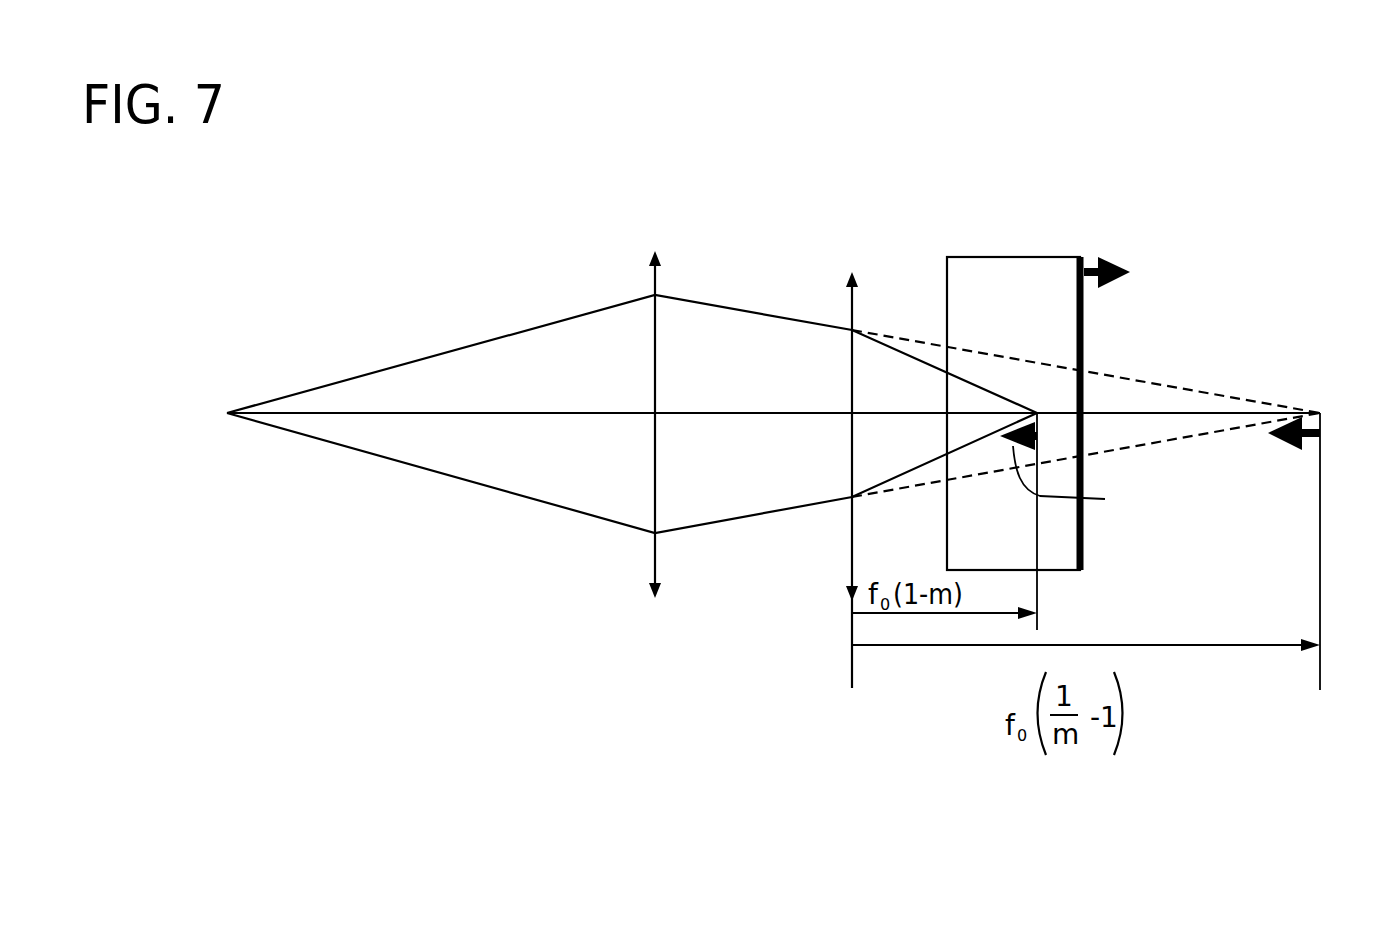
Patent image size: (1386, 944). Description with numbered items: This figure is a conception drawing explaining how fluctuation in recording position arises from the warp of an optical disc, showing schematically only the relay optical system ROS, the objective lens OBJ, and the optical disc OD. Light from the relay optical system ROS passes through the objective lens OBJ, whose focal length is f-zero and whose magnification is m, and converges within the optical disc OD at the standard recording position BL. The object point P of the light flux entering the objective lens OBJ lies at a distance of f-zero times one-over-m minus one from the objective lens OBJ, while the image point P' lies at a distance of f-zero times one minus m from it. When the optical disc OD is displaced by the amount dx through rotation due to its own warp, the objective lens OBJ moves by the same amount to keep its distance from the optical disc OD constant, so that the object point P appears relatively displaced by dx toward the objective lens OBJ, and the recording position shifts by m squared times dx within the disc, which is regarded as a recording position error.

The relay optical system ROS is at (651, 389).
The objective lens OBJ is at (848, 453).
The optical disc OD is at (1013, 380).
The standard recording position BL is at (1083, 257).
The object point P is at (1324, 530).
The image point P' is at (1122, 500).
The displacement amount dx is at (1124, 265).